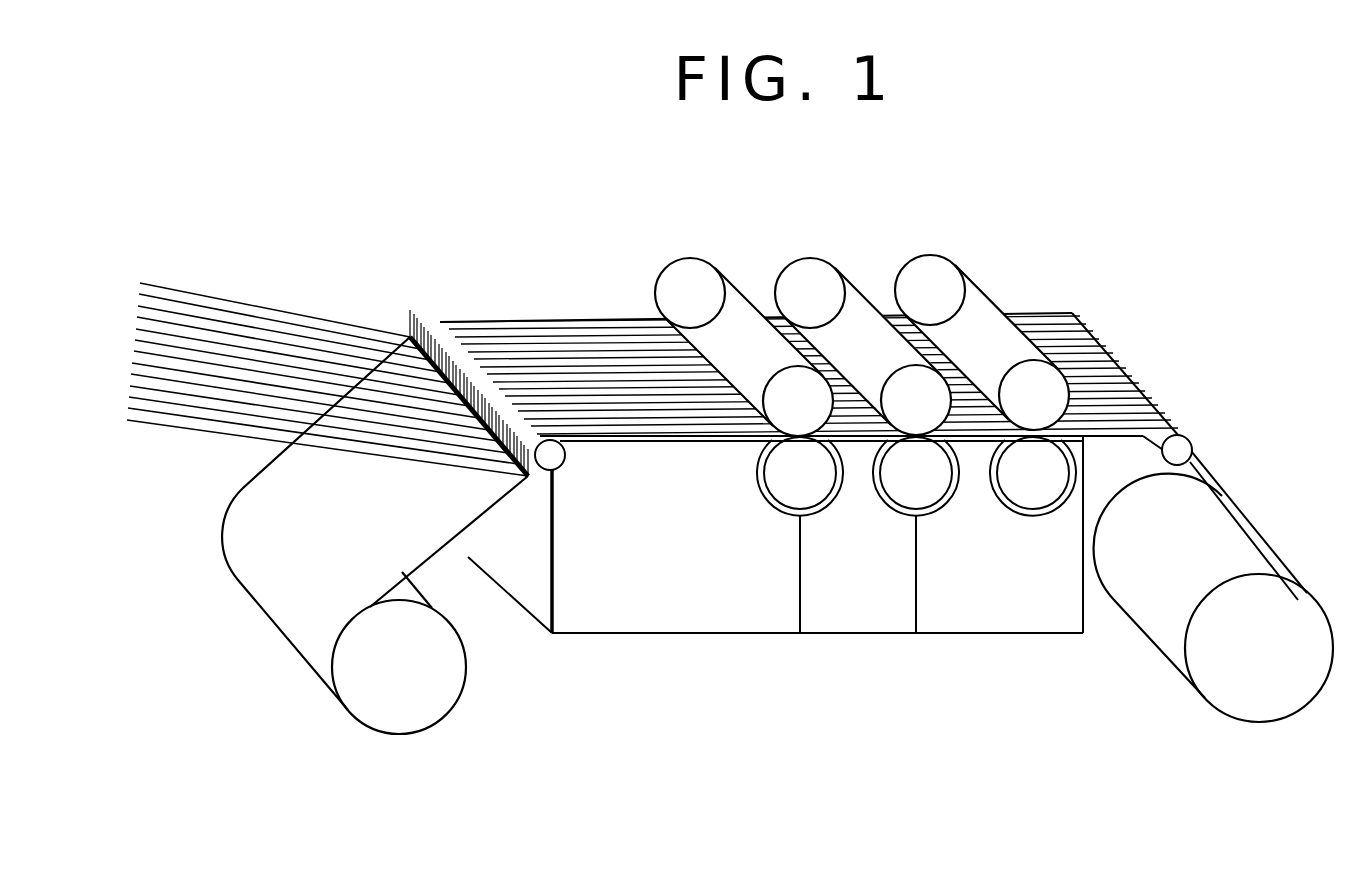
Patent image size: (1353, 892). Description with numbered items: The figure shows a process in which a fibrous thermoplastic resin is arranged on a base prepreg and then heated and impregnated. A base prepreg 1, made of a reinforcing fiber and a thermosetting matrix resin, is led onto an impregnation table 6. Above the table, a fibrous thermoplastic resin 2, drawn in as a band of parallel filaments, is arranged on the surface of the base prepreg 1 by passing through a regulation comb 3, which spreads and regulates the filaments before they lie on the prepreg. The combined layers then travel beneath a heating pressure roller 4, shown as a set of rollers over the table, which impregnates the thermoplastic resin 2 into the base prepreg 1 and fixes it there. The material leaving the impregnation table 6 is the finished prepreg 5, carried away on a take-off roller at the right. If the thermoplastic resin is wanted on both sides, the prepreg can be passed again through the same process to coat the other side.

The base prepreg 1 is at (405, 552).
The fibrous thermoplastic resin 2 is at (237, 295).
The regulation comb 3 is at (412, 312).
The heating pressure roller 4 is at (942, 243).
The prepreg 5 is at (1247, 522).
The impregnation table 6 is at (620, 612).